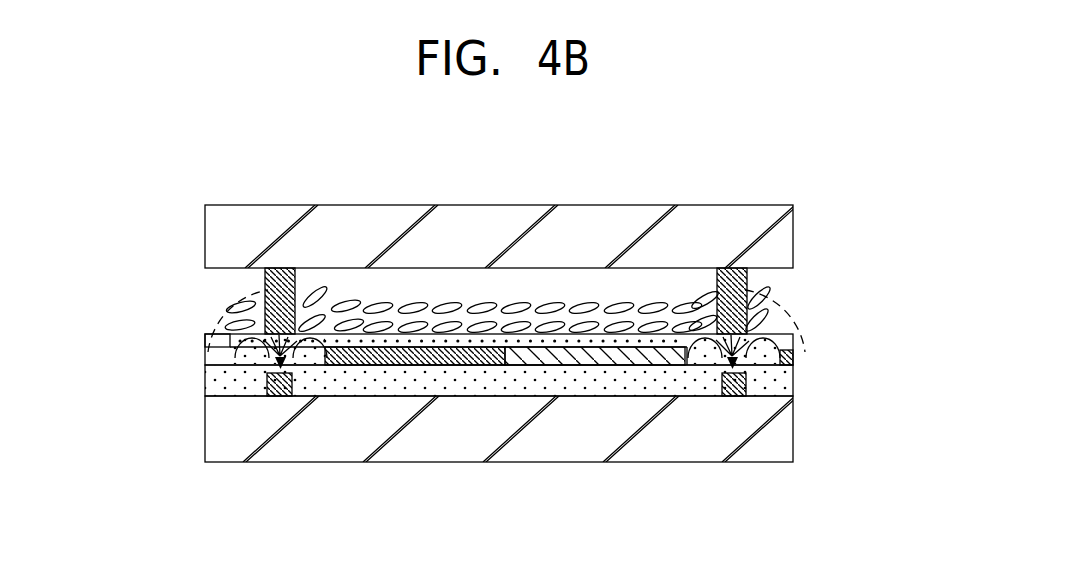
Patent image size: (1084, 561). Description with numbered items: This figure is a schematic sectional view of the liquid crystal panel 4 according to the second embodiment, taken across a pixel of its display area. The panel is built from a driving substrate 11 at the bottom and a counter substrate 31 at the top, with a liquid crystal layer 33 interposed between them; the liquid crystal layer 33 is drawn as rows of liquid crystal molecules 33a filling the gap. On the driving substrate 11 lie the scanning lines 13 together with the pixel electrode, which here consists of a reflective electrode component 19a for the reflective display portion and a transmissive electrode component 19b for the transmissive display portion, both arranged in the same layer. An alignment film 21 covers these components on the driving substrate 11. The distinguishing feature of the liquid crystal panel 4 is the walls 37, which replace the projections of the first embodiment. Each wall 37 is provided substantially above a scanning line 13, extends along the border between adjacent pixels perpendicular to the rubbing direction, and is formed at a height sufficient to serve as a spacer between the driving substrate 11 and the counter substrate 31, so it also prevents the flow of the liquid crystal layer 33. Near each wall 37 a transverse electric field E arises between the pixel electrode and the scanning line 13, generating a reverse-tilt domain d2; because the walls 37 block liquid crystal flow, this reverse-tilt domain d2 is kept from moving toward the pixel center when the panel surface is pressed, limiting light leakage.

The liquid crystal panel 4 is at (742, 146).
The counter substrate 31 is at (793, 243).
The driving substrate 11 is at (793, 450).
The scanning line 13 is at (266, 383).
The alignment film 21 is at (207, 341).
The reflective electrode component 19a is at (404, 365).
The transmissive electrode component 19b is at (615, 366).
The wall 37 is at (264, 292).
The transverse electric field E is at (212, 292).
The liquid crystal layer 33 is at (548, 281).
The liquid crystal molecules 33a is at (475, 302).
The reverse-tilt domain d2 is at (318, 290).